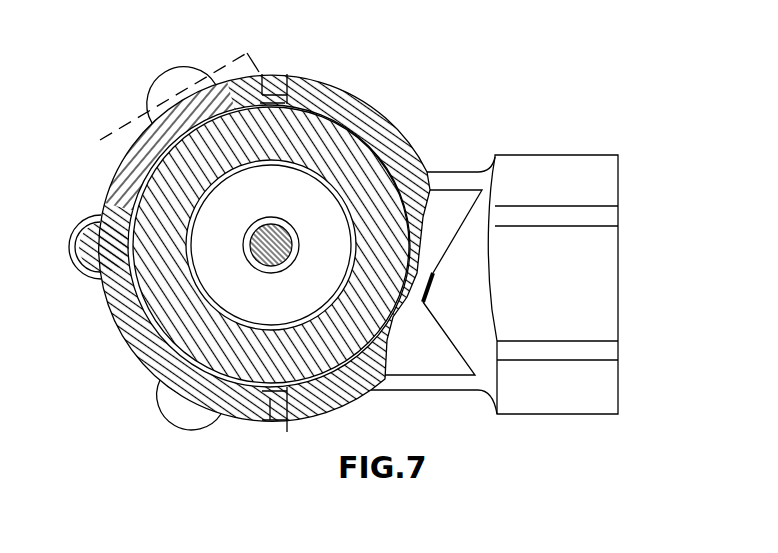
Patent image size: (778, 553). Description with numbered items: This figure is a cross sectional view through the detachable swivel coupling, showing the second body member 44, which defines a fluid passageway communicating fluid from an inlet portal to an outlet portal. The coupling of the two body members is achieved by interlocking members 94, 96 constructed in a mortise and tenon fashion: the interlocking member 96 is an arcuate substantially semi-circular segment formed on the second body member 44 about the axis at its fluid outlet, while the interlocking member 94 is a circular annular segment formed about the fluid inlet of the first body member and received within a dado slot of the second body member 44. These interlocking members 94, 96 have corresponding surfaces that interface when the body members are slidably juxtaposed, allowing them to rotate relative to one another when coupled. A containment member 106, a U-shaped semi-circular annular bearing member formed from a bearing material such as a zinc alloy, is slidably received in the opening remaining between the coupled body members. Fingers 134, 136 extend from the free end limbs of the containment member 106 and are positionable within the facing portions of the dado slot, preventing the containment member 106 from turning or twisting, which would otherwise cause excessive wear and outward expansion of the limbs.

The second body member 44 is at (533, 153).
The interlocking member 94 is at (370, 150).
The interlocking member 96 is at (360, 105).
The containment member 106 is at (125, 323).
The finger 134 is at (287, 432).
The finger 136 is at (270, 87).